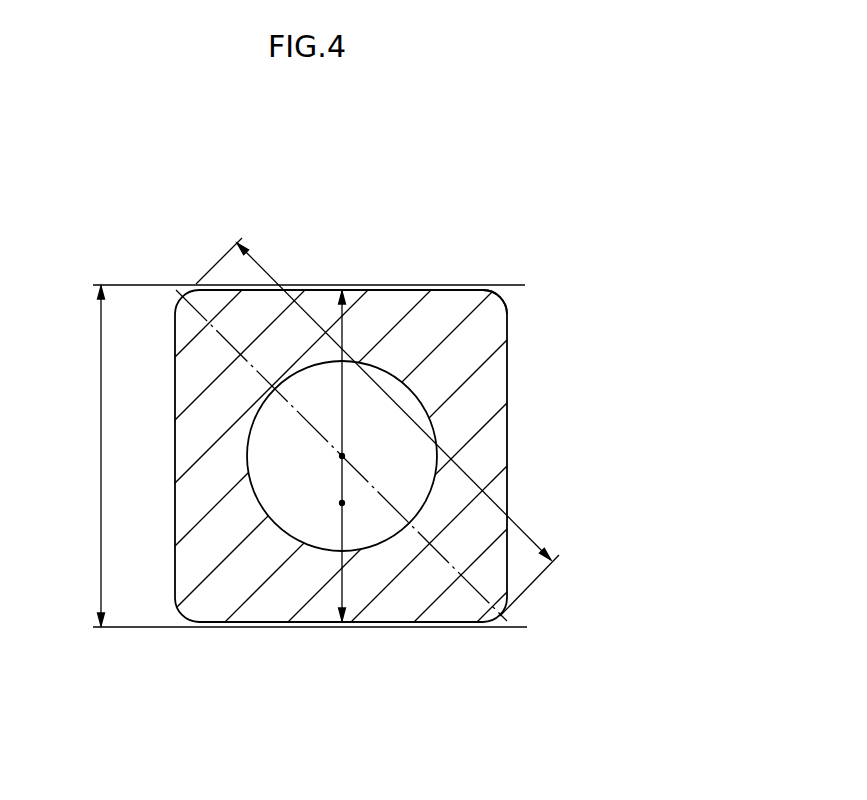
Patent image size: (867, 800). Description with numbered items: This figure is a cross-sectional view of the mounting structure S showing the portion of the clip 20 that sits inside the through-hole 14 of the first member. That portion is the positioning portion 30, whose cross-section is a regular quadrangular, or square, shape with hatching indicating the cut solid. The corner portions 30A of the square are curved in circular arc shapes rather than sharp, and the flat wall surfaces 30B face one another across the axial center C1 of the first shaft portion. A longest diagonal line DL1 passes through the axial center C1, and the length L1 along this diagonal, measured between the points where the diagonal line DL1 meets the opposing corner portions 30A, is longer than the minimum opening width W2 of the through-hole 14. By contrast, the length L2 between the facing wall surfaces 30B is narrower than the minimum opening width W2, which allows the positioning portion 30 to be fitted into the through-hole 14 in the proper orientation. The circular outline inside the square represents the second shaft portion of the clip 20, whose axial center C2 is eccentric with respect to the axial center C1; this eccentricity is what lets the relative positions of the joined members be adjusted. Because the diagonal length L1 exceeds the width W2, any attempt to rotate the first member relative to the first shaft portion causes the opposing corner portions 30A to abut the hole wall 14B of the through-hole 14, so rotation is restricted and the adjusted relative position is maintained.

The mounting structure S is at (566, 172).
The hole wall 14B is at (398, 422).
The through-hole 14 is at (518, 289).
The clip 20 is at (637, 292).
The positioning portion 30 is at (414, 431).
The corner portions 30A is at (500, 297).
The wall surfaces 30B is at (378, 286).
The axial center C1 is at (346, 456).
The axial center C2 is at (339, 503).
The longest diagonal line DL1 is at (449, 572).
The length L1 is at (470, 464).
The length L2 is at (342, 556).
The minimum opening width W2 is at (100, 460).